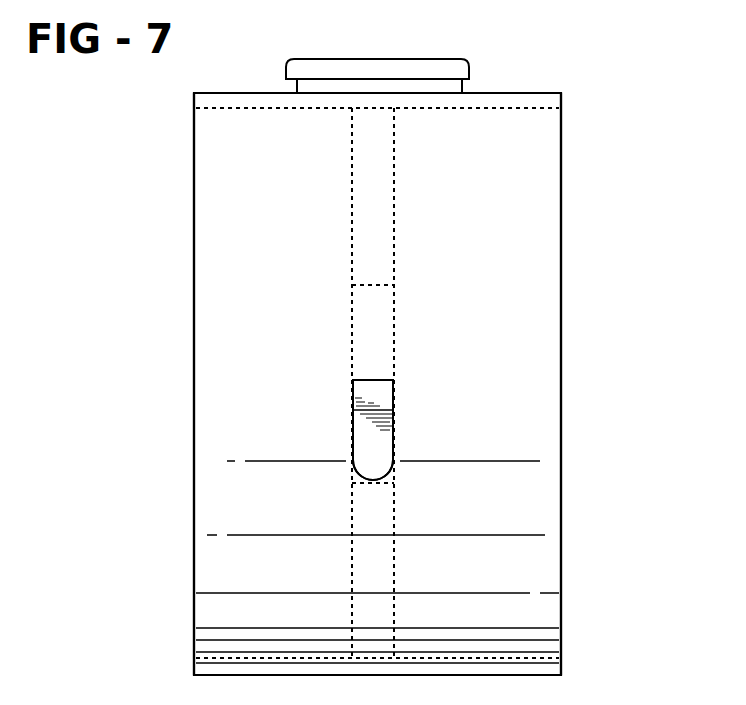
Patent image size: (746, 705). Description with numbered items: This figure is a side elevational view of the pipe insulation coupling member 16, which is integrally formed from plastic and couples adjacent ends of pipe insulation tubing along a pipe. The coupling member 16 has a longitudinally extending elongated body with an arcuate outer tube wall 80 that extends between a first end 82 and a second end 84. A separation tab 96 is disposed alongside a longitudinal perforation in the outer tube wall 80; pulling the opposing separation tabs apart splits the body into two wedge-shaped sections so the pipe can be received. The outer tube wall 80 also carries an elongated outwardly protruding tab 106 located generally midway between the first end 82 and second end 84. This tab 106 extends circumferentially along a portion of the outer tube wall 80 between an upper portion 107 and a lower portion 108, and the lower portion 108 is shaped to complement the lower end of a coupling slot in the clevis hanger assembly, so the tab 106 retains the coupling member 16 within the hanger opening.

The pipe insulation coupling member 16 is at (210, 92).
The arcuate outer tube wall 80 is at (533, 175).
The first end 82 is at (194, 298).
The second end 84 is at (561, 343).
The separation tab 96 is at (466, 53).
The outwardly protruding tab 106 is at (393, 425).
The upper portion 107 is at (372, 380).
The lower portion 108 is at (387, 478).